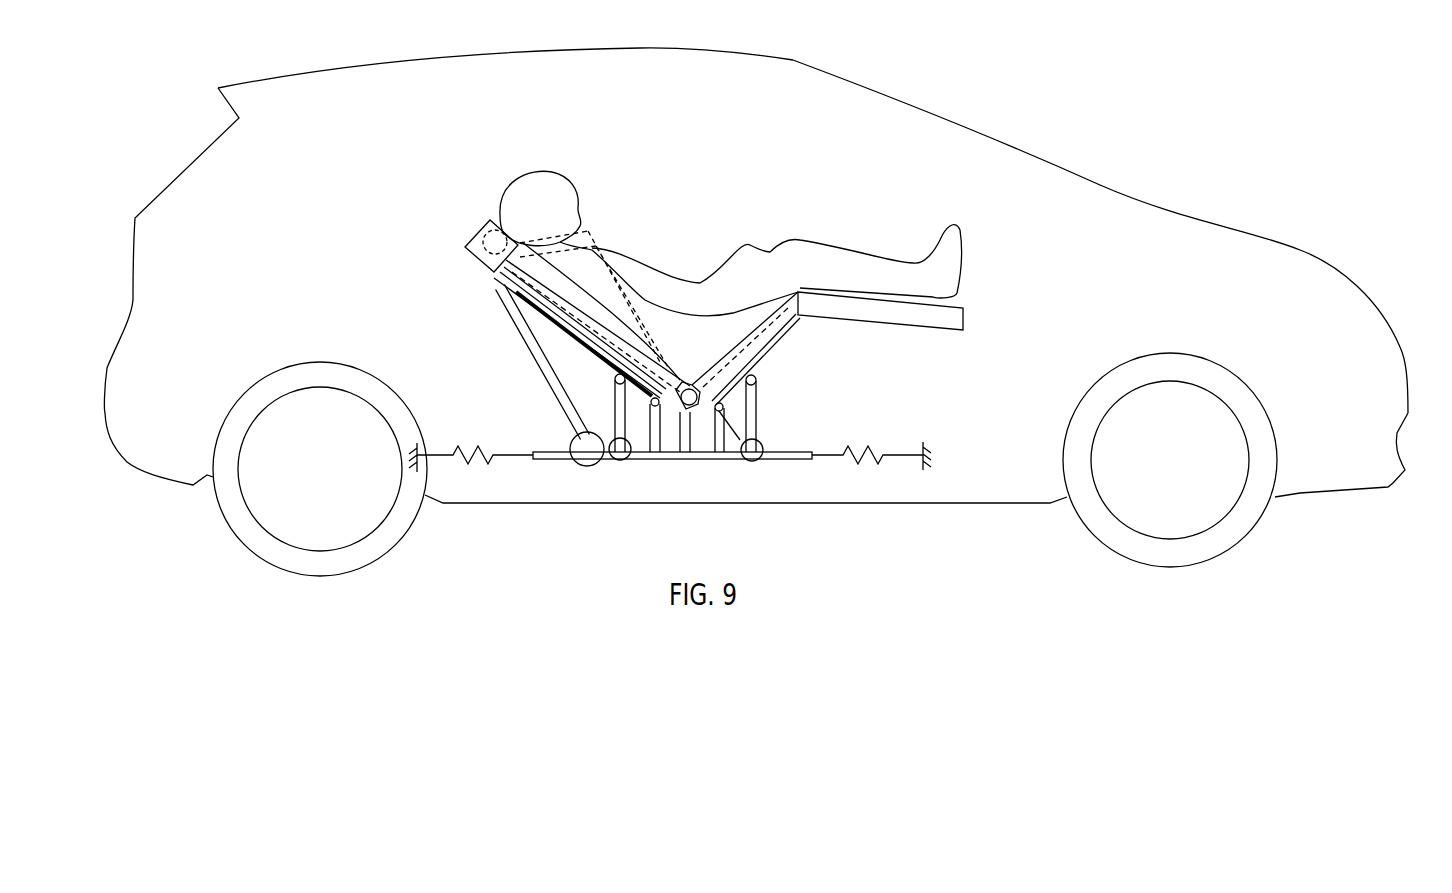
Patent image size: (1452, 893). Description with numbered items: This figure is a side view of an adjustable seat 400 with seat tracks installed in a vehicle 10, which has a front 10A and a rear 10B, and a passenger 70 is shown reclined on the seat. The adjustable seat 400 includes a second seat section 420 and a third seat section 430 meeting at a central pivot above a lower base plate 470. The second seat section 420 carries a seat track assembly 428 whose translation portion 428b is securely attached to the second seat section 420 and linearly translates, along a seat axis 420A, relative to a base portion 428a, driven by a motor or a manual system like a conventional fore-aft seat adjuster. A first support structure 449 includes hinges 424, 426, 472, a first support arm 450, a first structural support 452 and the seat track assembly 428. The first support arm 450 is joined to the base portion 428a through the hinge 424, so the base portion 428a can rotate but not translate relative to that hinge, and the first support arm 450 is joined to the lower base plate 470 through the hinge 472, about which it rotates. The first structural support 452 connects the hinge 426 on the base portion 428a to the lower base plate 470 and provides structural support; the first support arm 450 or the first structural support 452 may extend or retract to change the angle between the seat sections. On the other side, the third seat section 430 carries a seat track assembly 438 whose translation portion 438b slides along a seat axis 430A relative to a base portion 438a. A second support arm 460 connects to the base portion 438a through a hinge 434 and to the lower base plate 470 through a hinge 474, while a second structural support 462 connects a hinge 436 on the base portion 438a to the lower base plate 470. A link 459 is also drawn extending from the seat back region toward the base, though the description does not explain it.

The vehicle 10 is at (759, 295).
The front of the vehicle 10A is at (1403, 357).
The rear of the vehicle 10B is at (107, 368).
The adjustable seat 400 is at (418, 163).
The passenger 70 is at (523, 175).
The third seat section 430 is at (560, 298).
The seat axis 430A is at (625, 290).
The seat track assembly 438 is at (553, 297).
The base portion 438a is at (552, 338).
The translation portion 438b is at (603, 262).
The second seat section 420 is at (806, 348).
The seat axis 420A is at (770, 324).
The seat track assembly 428 is at (752, 348).
The base portion 428a is at (797, 360).
The translation portion 428b is at (697, 312).
The lower base plate 470 is at (700, 460).
The seat back link 459 is at (574, 408).
The second support arm 460 is at (578, 438).
The hinge 474 is at (628, 464).
The hinge 434 is at (617, 385).
The hinge 436 is at (683, 412).
The second structural support 462 is at (660, 438).
The hinge 426 is at (756, 427).
The first structural support 452 is at (720, 412).
The hinge 424 is at (774, 411).
The first support arm 450 is at (757, 398).
The first support structure 449 is at (808, 408).
The hinge 472 is at (758, 458).